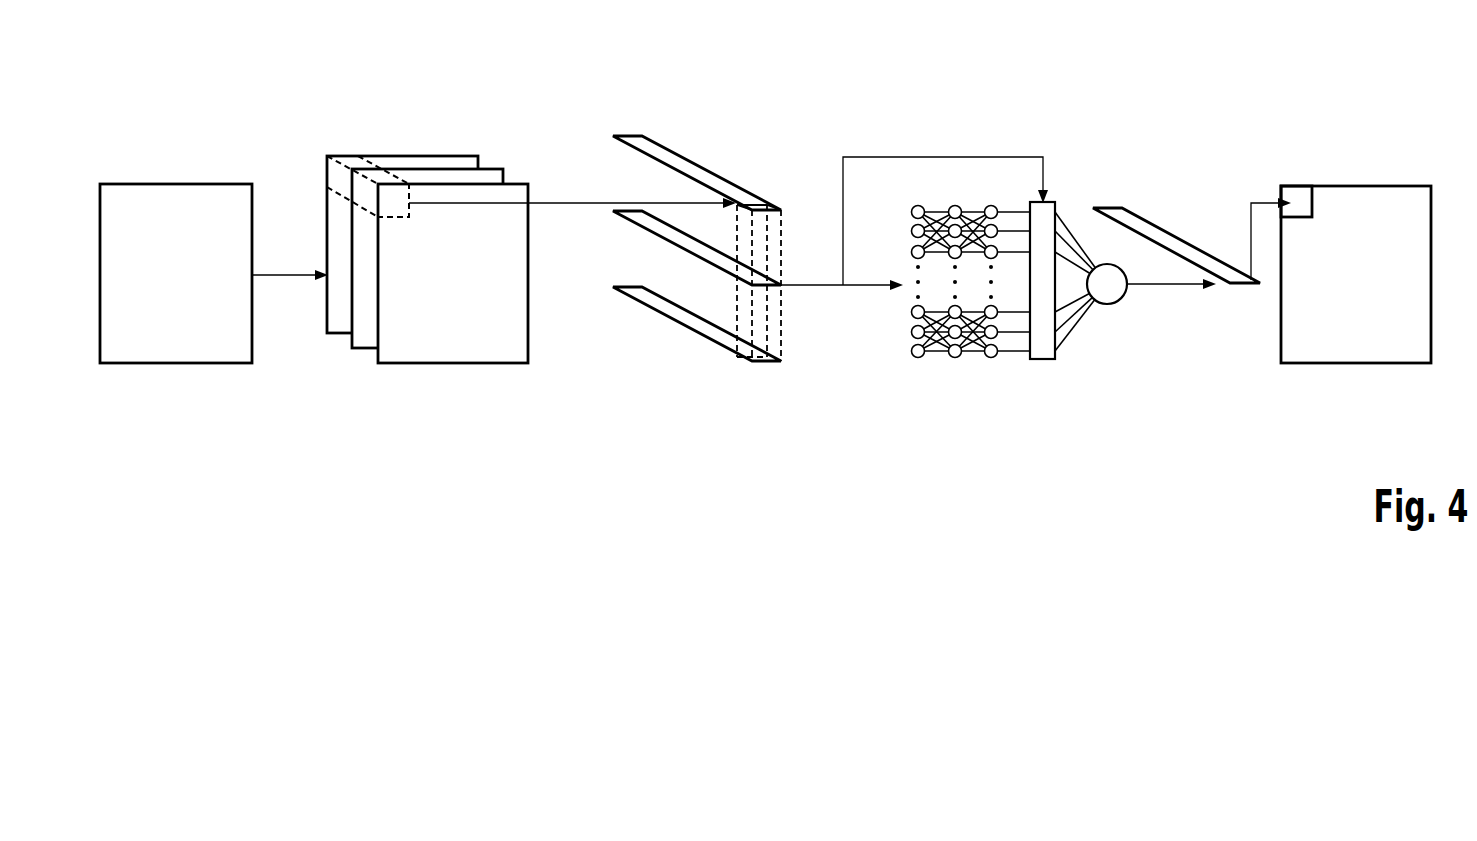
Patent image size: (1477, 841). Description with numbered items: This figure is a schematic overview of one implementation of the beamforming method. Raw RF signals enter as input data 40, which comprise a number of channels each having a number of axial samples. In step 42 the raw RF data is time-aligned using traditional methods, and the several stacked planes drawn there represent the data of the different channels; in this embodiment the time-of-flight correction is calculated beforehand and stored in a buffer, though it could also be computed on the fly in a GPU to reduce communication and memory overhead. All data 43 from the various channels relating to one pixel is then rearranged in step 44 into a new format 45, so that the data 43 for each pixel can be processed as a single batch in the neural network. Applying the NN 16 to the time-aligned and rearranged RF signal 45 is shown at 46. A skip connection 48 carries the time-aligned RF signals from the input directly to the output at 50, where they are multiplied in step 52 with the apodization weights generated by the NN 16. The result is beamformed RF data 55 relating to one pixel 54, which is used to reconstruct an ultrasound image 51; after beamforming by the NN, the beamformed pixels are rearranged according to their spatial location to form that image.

The input data 40 is at (178, 184).
The time-alignment step 42 is at (431, 118).
The data 43 is at (345, 156).
The rearranging step 44 is at (697, 265).
The new format 45 is at (679, 118).
The NN application step 46 is at (971, 265).
The skip connection 48 is at (915, 145).
The output 50 is at (1057, 202).
The multiplication step 52 is at (1107, 305).
The beamformed RF data 55 is at (1182, 223).
The pixel 54 is at (1298, 186).
The ultrasound image 51 is at (1370, 186).
The NN 16 is at (957, 402).